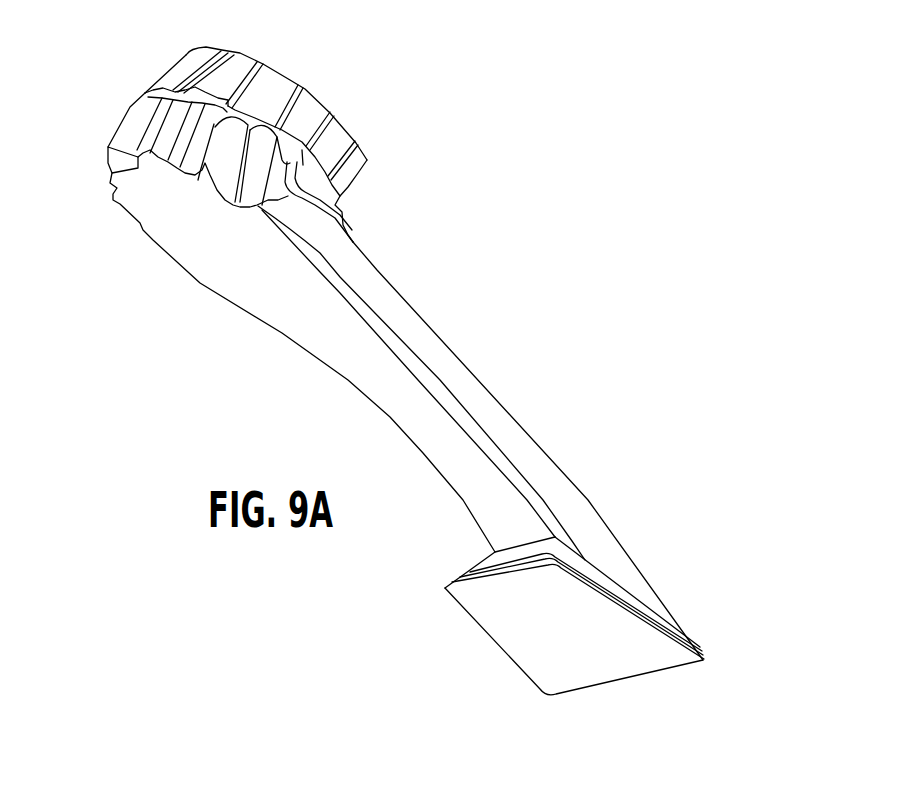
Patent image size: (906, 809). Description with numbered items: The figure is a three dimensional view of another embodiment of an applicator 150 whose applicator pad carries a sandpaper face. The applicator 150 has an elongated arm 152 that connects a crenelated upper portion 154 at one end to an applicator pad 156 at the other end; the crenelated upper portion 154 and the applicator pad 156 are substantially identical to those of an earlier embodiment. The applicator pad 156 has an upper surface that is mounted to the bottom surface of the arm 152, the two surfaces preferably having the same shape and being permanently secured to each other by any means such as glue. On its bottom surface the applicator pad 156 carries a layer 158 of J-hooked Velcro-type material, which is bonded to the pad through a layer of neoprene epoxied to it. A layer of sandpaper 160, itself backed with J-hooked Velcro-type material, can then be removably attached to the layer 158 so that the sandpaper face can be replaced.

The applicator 150 is at (212, 349).
The elongated arm 152 is at (447, 362).
The crenelated upper portion 154 is at (144, 44).
The applicator pad 156 is at (720, 632).
The layer of J-hooked Velcro-type material 158 is at (470, 572).
The layer of sandpaper 160 is at (625, 668).